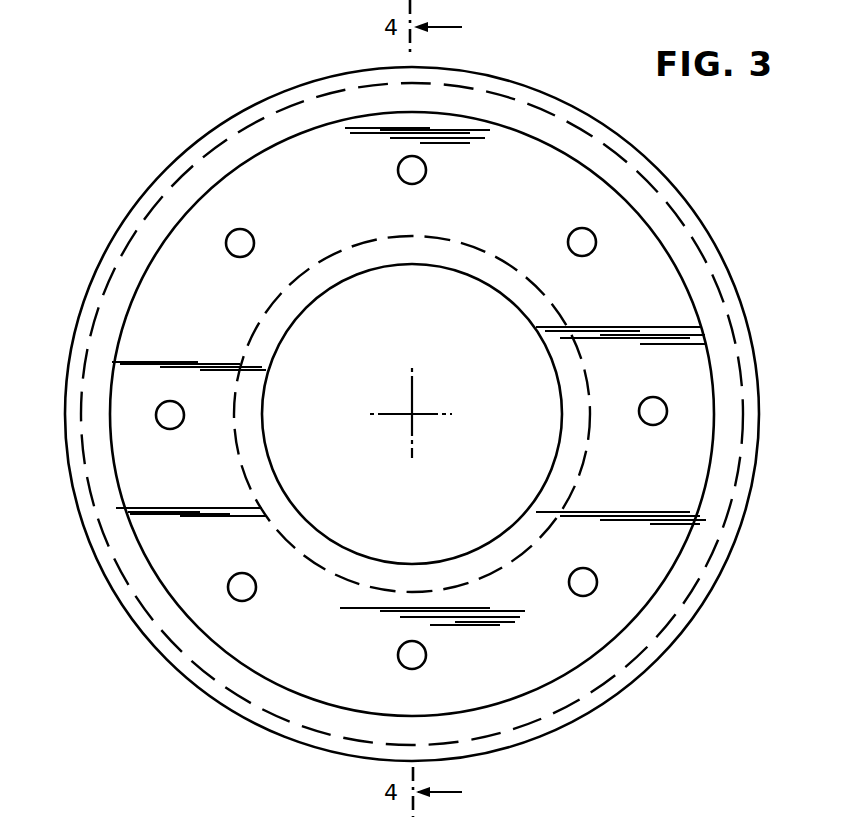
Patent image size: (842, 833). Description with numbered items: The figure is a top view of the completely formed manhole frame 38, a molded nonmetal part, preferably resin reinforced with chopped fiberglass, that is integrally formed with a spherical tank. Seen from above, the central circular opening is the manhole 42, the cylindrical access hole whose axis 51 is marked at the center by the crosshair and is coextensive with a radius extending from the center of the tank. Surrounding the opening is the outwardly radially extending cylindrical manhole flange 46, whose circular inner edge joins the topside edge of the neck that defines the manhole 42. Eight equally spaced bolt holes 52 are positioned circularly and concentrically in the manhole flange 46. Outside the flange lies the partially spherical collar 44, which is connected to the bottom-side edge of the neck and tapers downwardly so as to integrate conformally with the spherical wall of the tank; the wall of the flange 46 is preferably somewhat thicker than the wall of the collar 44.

The manhole frame 38 is at (118, 182).
The manhole 42 is at (476, 354).
The collar 44 is at (700, 547).
The manhole flange 46 is at (132, 410).
The axis 51 is at (413, 415).
The bolt holes 52 is at (233, 255).